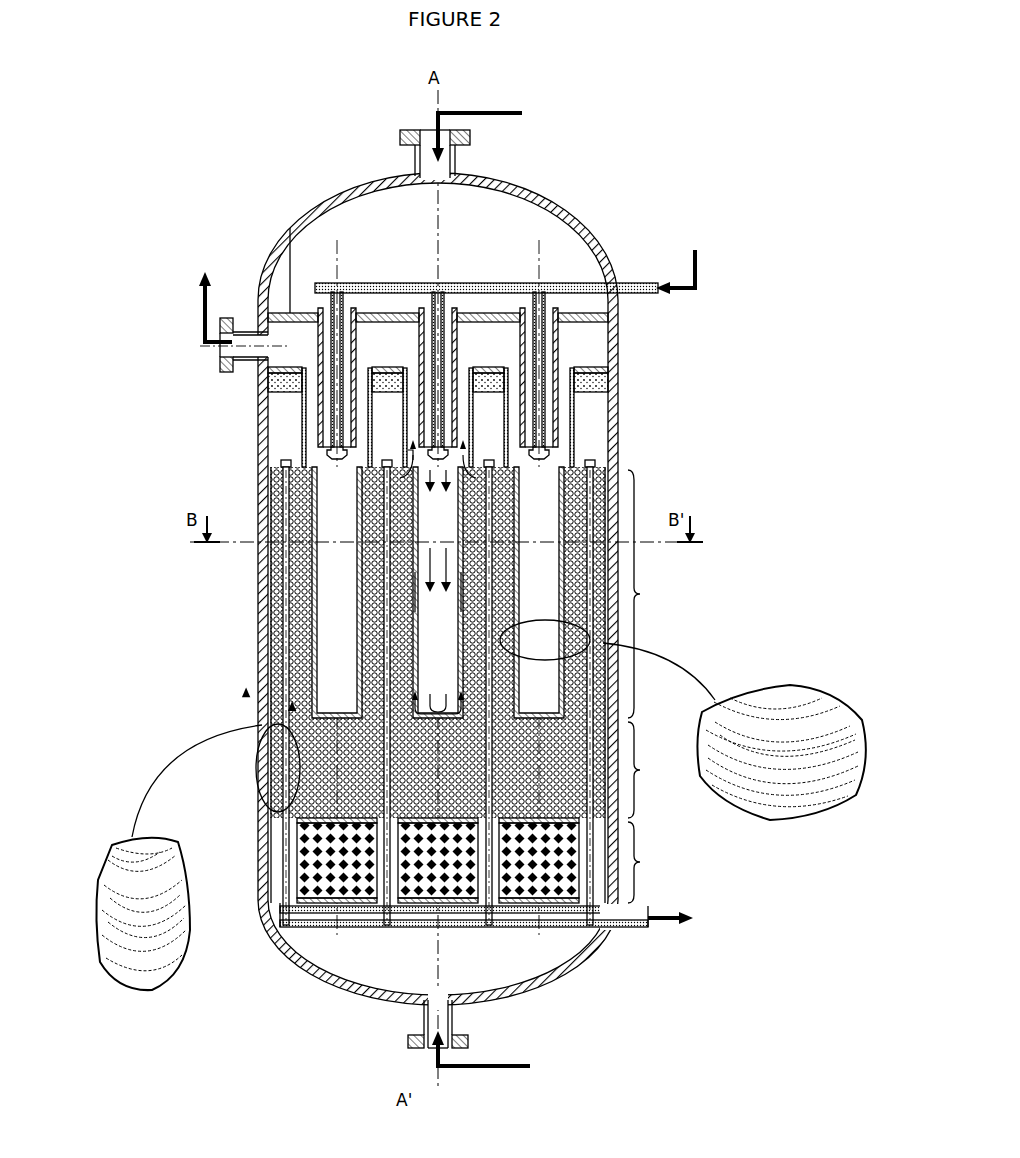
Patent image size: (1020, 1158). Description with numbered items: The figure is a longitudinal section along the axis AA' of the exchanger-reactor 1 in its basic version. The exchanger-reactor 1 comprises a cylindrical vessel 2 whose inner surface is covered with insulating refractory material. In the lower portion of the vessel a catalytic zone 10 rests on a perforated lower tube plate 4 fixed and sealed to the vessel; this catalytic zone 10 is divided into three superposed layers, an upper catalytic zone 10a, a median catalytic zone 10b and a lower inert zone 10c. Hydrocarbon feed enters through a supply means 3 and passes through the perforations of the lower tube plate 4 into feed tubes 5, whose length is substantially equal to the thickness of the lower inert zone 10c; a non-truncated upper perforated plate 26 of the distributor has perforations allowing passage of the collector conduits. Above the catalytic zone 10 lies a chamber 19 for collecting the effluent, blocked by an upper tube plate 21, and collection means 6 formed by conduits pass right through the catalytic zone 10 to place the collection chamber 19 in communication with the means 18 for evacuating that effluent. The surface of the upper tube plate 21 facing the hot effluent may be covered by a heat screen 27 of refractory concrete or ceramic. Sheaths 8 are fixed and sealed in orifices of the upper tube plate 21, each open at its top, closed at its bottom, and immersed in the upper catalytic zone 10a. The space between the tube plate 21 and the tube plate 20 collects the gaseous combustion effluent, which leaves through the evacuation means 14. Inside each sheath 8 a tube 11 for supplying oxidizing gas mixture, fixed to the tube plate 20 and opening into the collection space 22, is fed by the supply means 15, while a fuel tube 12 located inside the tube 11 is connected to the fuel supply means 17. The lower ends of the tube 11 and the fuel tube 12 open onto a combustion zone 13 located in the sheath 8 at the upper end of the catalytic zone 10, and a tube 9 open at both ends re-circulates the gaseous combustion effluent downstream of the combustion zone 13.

The exchanger-reactor 1 is at (650, 371).
The cylindrical vessel 2 is at (618, 430).
The means for supplying hydrocarbon feed 3 is at (438, 1034).
The perforated lower tube plate 4 is at (312, 895).
The feed tubes 5 is at (270, 846).
The means for collecting effluent 6 is at (270, 802).
The sheath 8 is at (268, 664).
The tube for re-circulating gaseous effluent from combustion 9 is at (300, 630).
The catalytic zone 10 is at (606, 735).
The upper catalytic zone 10a is at (656, 594).
The median catalytic zone 10b is at (656, 770).
The lower inert zone 10c is at (490, 860).
The tube for supplying an oxidizing gas mixture 11 is at (318, 422).
The fuel tube 12 is at (545, 356).
The combustion zone 13 is at (500, 455).
The evacuation means 14 is at (240, 350).
The means for supplying oxidizing gas mixture 15 is at (462, 152).
The means for supplying gaseous fuel 17 is at (645, 296).
The means for evacuating effluent from the catalytic zone 18 is at (332, 930).
The collection chamber 19 is at (585, 425).
The tube plate 20 is at (290, 228).
The upper tube plate 21 is at (292, 382).
The oxidizing gas mixture collection space 22 is at (500, 253).
The non-truncated upper perforated plate 26 is at (268, 775).
The heat screen 27 is at (496, 396).